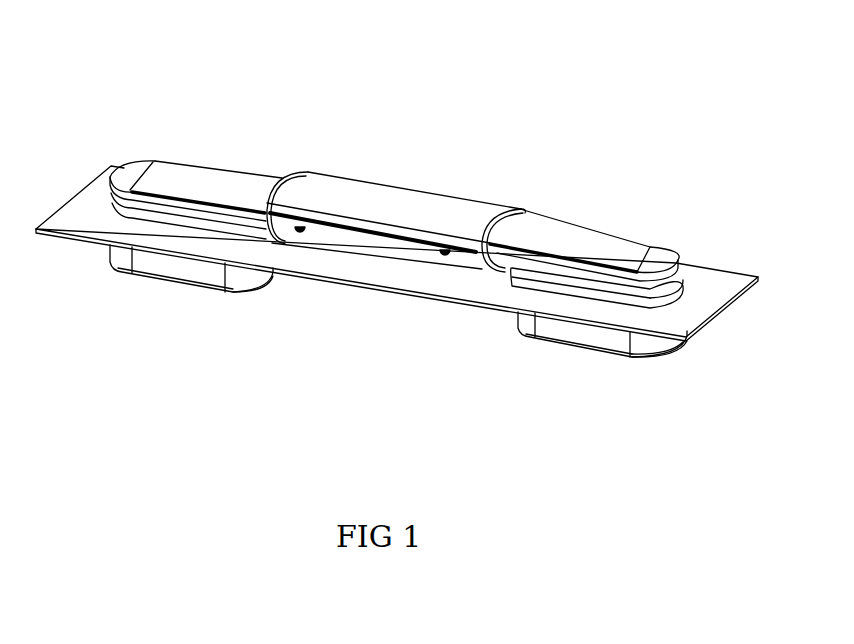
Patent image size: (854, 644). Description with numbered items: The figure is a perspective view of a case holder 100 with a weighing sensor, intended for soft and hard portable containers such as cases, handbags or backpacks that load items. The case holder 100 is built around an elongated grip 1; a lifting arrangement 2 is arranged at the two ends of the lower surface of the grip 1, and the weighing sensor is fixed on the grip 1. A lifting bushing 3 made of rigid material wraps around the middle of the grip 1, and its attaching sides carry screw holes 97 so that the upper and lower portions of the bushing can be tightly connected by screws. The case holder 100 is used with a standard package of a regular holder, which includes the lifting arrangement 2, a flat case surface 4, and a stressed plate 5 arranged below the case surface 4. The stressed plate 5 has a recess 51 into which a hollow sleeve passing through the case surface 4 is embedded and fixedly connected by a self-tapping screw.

The case holder 100 is at (402, 128).
The grip 1 is at (578, 221).
The lifting arrangement 2 is at (676, 278).
The lifting bushing 3 is at (431, 187).
The case surface 4 is at (707, 281).
The stressed plate 5 is at (576, 358).
The recess 51 is at (659, 348).
The screw holes 97 is at (302, 232).